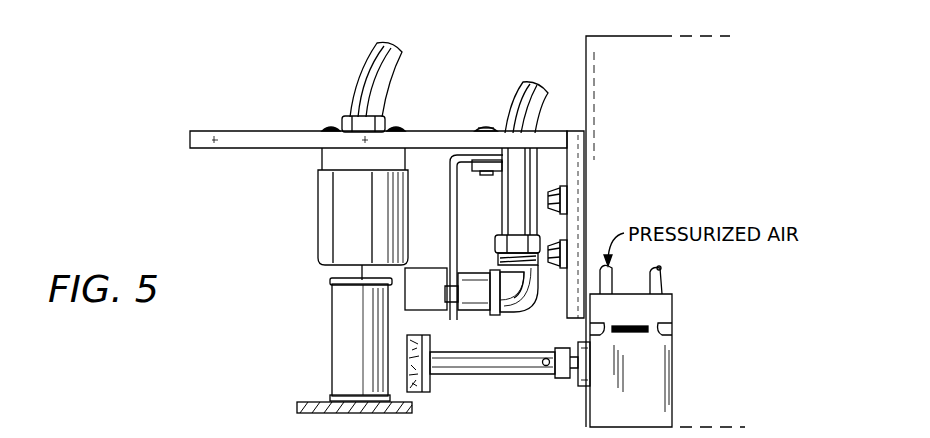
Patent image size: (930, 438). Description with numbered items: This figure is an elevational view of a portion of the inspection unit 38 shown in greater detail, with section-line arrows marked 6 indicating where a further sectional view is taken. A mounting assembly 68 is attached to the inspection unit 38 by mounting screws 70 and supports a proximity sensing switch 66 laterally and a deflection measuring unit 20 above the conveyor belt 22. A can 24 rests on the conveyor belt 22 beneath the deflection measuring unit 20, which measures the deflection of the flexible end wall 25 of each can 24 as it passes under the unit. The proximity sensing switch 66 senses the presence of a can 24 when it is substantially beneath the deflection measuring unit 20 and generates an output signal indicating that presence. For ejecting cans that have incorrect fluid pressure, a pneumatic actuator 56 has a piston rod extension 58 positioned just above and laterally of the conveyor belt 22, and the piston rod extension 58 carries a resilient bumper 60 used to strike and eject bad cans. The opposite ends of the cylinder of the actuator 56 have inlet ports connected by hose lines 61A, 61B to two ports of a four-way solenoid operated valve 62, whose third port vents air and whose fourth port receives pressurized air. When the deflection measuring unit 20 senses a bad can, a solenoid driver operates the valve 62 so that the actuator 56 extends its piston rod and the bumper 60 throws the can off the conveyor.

The section line 6 is at (362, 100).
The inspection unit 38 is at (620, 40).
The mounting assembly 68 is at (273, 148).
The deflection measuring unit 20 is at (350, 216).
The flexible end wall 25 is at (340, 277).
The can 24 is at (350, 348).
The conveyor belt 22 is at (300, 406).
The proximity sensing switch 66 is at (426, 270).
The mounting screws 70 is at (558, 190).
The piston rod extension 58 is at (499, 362).
The resilient bumper 60 is at (420, 394).
The four-way solenoid operated valve 62 is at (672, 308).
The hose line 61A is at (598, 340).
The hose line 61B is at (672, 336).
The pneumatic actuator 56 is at (625, 346).